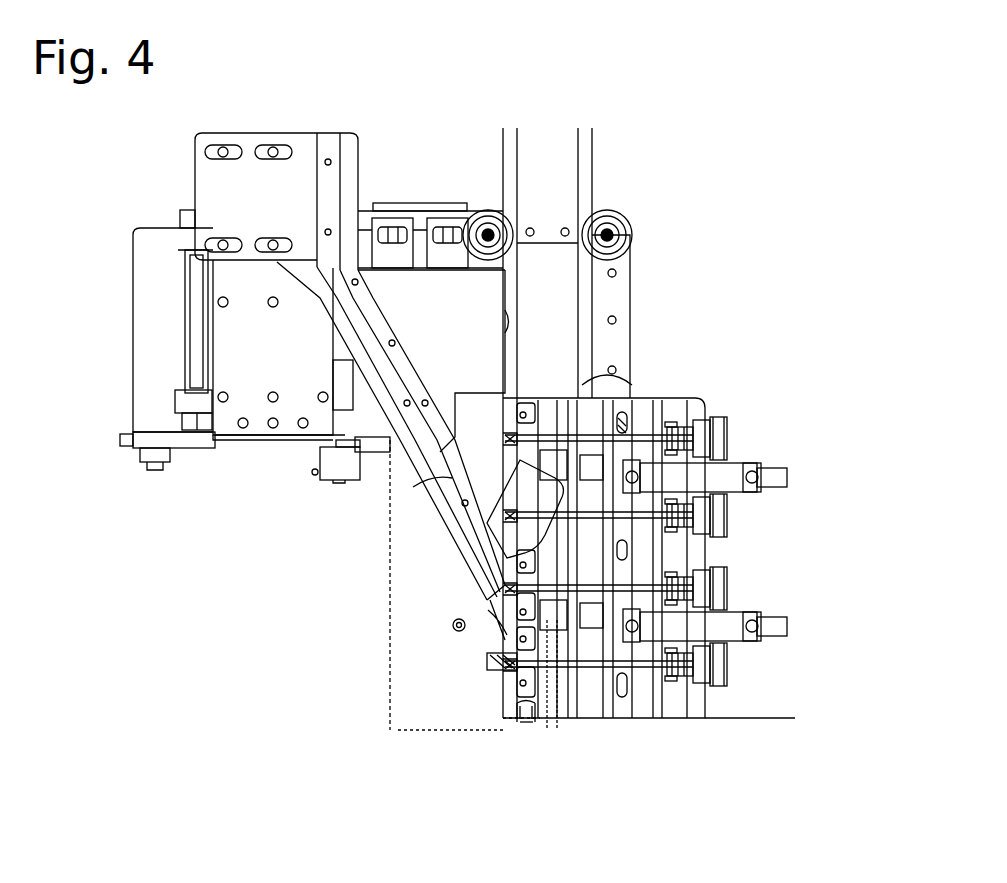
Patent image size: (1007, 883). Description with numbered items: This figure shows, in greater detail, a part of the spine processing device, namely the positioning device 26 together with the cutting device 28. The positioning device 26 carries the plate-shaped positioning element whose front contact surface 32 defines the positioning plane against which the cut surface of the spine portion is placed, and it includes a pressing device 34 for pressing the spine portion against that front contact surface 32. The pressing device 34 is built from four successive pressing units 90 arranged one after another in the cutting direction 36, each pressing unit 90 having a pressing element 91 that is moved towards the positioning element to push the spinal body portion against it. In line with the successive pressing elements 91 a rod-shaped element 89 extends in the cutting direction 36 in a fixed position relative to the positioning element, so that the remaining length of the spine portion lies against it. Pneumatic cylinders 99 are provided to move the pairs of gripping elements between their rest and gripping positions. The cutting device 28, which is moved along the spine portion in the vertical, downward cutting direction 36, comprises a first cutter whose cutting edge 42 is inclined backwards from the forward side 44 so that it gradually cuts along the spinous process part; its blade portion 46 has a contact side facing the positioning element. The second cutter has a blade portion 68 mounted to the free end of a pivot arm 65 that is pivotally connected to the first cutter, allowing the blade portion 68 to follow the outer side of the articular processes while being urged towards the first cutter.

The positioning device 26 is at (649, 383).
The cutting device 28 is at (253, 459).
The front contact surface 32 is at (424, 585).
The pressing device 34 is at (508, 694).
The cutting direction 36 is at (353, 684).
The cutting edge 42 is at (445, 547).
The forward side 44 is at (490, 636).
The blade portion 46 is at (352, 308).
The pivot arm 65 is at (452, 478).
The blade portion 68 is at (500, 533).
The rod-shaped element 89 is at (527, 720).
The pressing unit 90 is at (733, 435).
The pressing element 91 is at (523, 413).
The pneumatic cylinder 99 is at (720, 478).